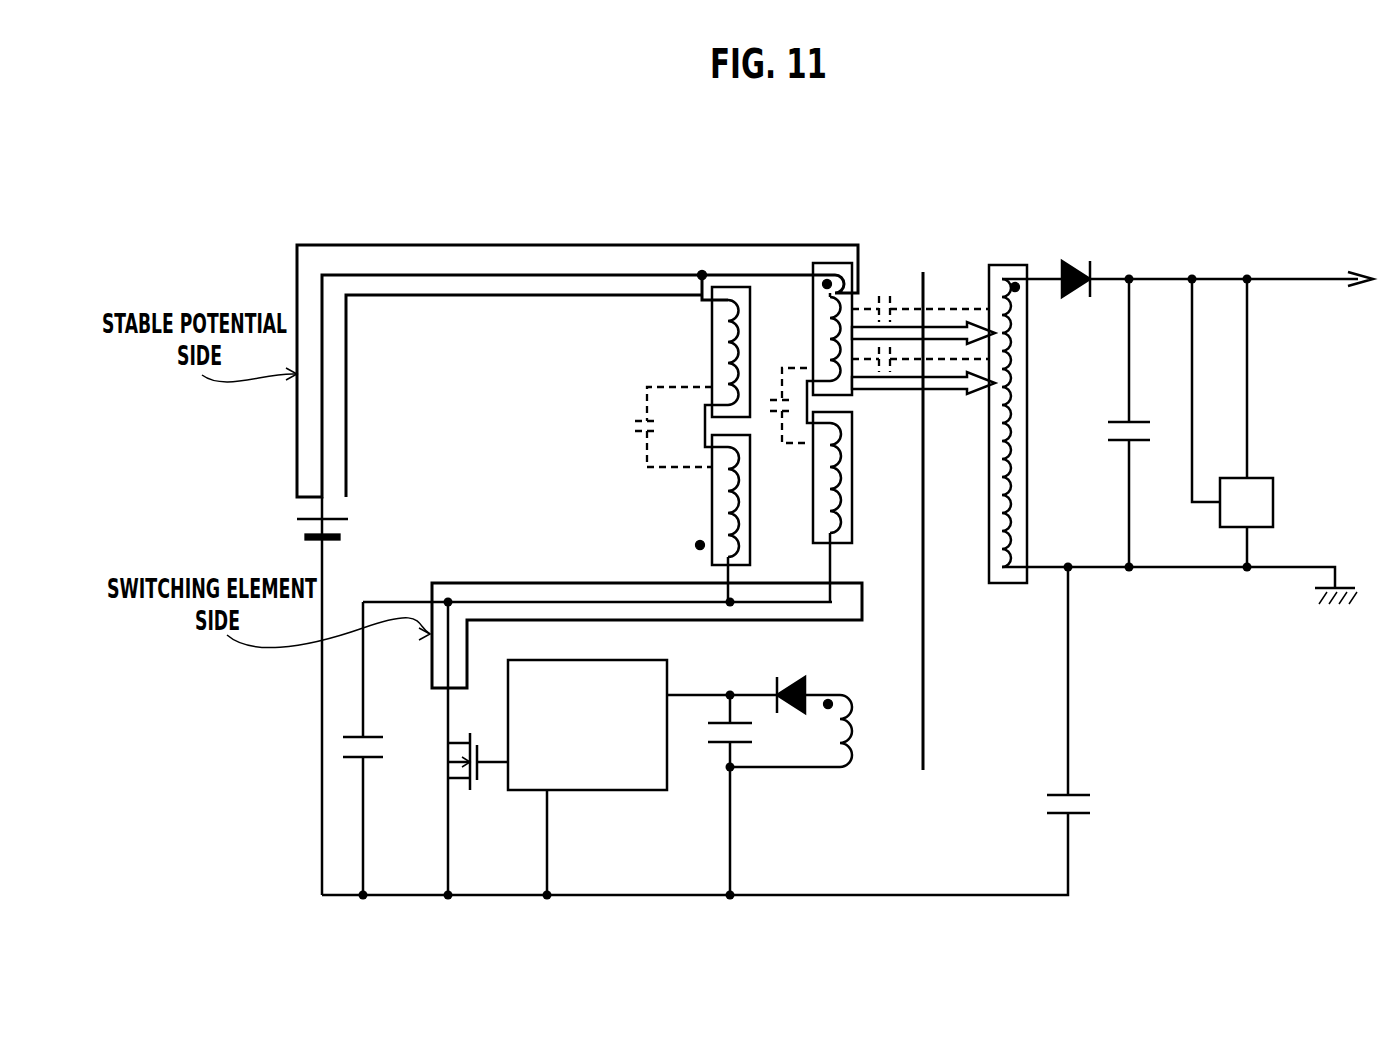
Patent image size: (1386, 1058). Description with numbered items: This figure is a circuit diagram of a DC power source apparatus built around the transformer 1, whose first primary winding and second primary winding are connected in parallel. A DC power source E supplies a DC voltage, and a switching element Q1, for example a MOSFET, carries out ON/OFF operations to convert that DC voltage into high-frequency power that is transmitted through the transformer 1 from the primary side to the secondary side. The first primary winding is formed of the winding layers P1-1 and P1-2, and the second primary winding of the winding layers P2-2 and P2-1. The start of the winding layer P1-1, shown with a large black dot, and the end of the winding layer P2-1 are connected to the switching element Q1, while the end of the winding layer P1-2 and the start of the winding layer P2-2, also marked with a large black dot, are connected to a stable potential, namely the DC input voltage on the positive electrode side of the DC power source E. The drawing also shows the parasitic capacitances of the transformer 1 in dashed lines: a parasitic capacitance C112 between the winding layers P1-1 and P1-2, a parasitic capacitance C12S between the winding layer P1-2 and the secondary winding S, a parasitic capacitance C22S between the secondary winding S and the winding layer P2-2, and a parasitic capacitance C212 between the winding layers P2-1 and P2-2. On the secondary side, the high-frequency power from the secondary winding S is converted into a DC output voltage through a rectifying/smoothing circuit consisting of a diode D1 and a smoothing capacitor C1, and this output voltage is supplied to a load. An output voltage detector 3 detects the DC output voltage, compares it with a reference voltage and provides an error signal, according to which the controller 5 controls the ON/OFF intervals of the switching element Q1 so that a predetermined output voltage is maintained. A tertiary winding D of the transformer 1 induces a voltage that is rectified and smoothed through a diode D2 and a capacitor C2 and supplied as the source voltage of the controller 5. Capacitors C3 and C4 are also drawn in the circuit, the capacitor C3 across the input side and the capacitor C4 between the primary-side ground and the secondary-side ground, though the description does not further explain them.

The transformer 1 is at (923, 255).
The output voltage detector 3 is at (1262, 478).
The controller 5 is at (615, 791).
The DC power source E is at (330, 696).
The switching element Q1 is at (478, 748).
The smoothing capacitor C1 is at (1137, 423).
The capacitor C2 is at (742, 743).
The input capacitor C3 is at (373, 748).
The capacitor C4 is at (714, 731).
The diode D1 is at (1077, 262).
The diode D2 is at (808, 678).
The tertiary winding D is at (791, 731).
The secondary winding S is at (1019, 424).
The winding layer P1-1 is at (715, 518).
The winding layer P1-2 is at (715, 359).
The winding layer P2-1 is at (817, 507).
The winding layer P2-2 is at (817, 343).
The parasitic capacitance C112 is at (647, 427).
The parasitic capacitance C212 is at (772, 398).
The parasitic capacitance C12S is at (893, 300).
The parasitic capacitance C22S is at (892, 372).